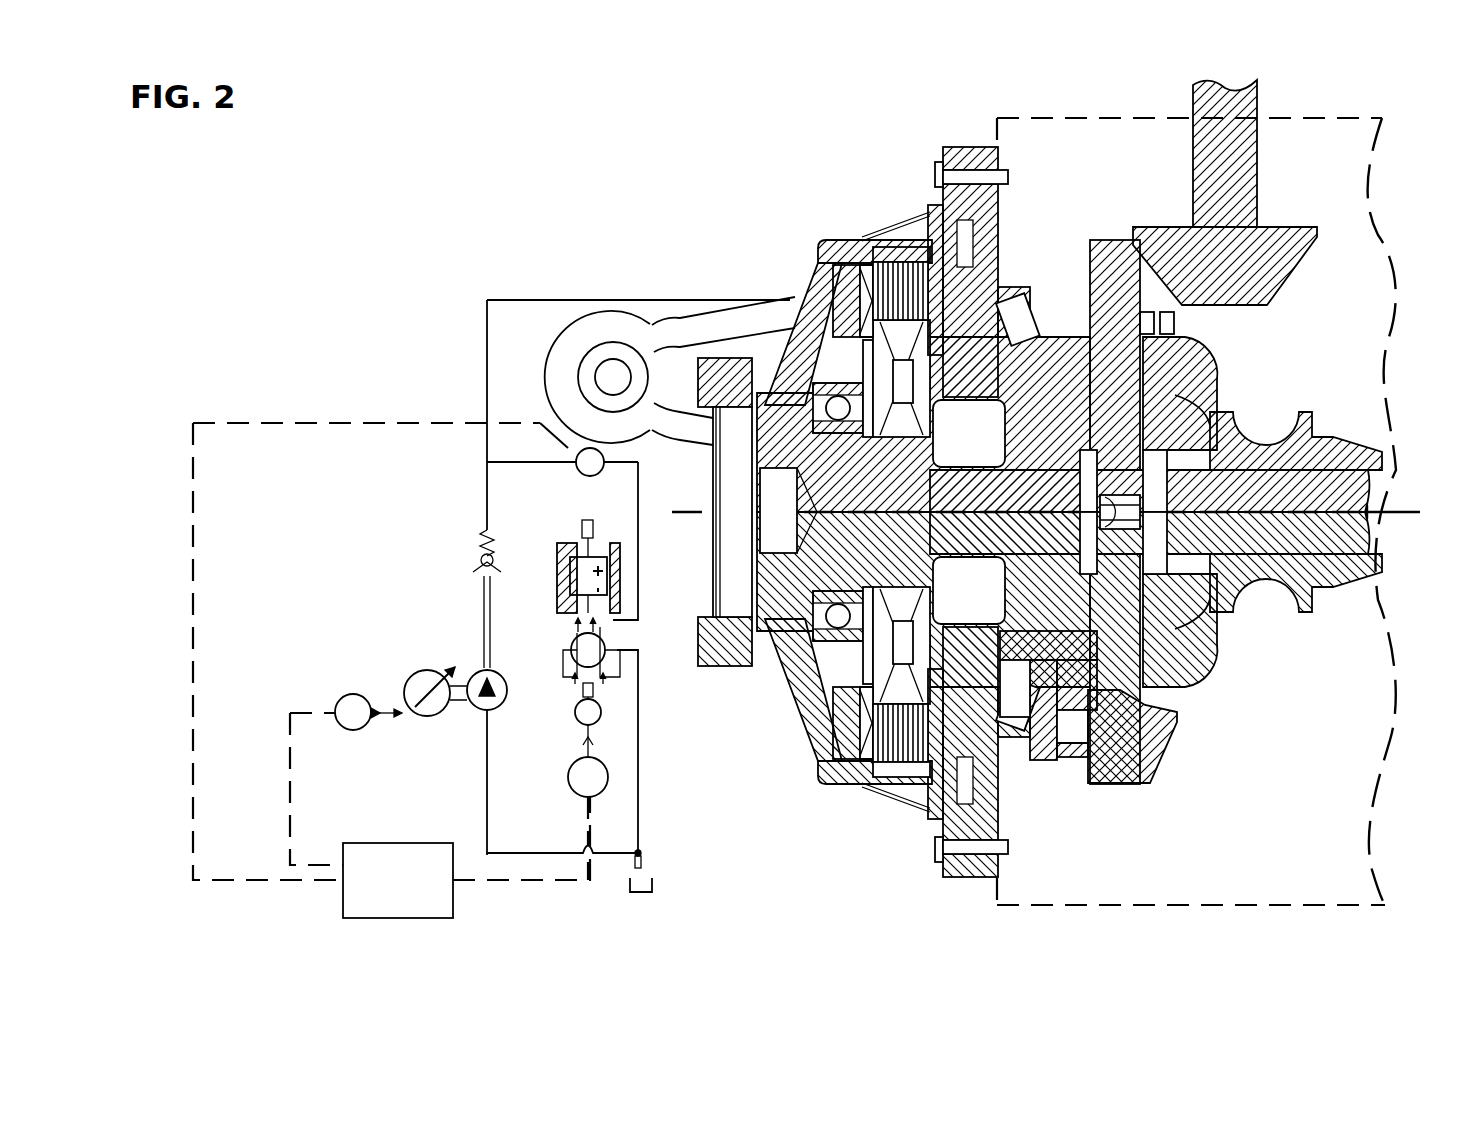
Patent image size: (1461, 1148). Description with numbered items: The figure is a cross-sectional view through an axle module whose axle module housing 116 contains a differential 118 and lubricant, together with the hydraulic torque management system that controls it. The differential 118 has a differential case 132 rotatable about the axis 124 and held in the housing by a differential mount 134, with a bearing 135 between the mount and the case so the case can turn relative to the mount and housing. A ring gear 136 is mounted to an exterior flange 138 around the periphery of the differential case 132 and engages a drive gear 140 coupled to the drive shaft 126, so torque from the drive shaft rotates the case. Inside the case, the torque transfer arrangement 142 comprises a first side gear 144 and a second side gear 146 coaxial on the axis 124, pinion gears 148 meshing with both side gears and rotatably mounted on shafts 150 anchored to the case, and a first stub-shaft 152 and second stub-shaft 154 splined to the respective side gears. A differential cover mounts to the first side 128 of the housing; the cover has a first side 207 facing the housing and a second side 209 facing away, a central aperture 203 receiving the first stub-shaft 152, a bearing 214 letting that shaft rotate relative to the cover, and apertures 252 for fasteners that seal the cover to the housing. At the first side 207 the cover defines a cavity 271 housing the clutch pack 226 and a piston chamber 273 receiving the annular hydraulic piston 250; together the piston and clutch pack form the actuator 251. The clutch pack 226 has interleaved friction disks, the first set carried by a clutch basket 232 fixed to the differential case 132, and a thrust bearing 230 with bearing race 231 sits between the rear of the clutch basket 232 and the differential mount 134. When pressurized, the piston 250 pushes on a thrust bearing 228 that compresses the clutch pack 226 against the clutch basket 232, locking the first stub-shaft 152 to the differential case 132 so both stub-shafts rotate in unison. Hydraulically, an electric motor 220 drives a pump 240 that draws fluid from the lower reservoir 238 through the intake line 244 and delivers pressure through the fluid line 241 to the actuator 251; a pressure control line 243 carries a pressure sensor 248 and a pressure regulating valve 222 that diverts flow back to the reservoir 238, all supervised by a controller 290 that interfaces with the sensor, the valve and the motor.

The axle module housing 116 is at (1053, 115).
The differential 118 is at (1218, 380).
The axis 124 is at (1402, 513).
The drive shaft 126 is at (1258, 100).
The first side 128 is at (998, 140).
The differential case 132 is at (1225, 396).
The differential mount 134 is at (1000, 223).
The bearing 135 is at (1030, 705).
The ring gear 136 is at (1128, 785).
The exterior flange 138 is at (1062, 760).
The drive gear 140 is at (1288, 226).
The torque transfer arrangement 142 is at (1180, 628).
The first side gear 144 is at (1040, 430).
The second side gear 146 is at (1212, 430).
The pinion gears 148 is at (1177, 380).
The shafts 150 is at (1098, 380).
The first stub-shaft 152 is at (735, 667).
The second stub-shaft 154 is at (1358, 473).
The central aperture 203 is at (830, 395).
The first side 207 is at (953, 835).
The second side 209 is at (780, 687).
The bearing 214 is at (800, 355).
The electric motor 220 is at (410, 675).
The pressure regulating valve 222 is at (558, 573).
The clutch pack 226 is at (898, 770).
The thrust bearing 228 is at (862, 752).
The thrust bearing 230 is at (953, 755).
The bearing race 231 is at (965, 295).
The clutch basket 232 is at (950, 773).
The lower reservoir 238 is at (632, 893).
The pump 240 is at (480, 710).
The fluid line 241 is at (487, 440).
The pressure control line 243 is at (640, 500).
The intake line 244 is at (487, 818).
The pressure sensor 248 is at (575, 470).
The annular hydraulic piston 250 is at (835, 720).
The actuator 251 is at (872, 258).
The apertures 252 is at (965, 852).
The cavity 271 is at (893, 250).
The piston chamber 273 is at (838, 265).
The controller 290 is at (362, 843).